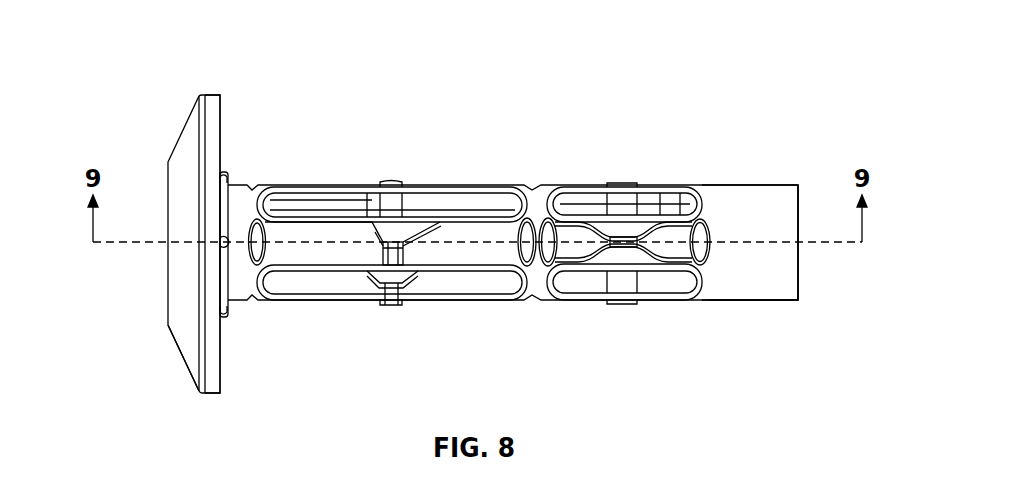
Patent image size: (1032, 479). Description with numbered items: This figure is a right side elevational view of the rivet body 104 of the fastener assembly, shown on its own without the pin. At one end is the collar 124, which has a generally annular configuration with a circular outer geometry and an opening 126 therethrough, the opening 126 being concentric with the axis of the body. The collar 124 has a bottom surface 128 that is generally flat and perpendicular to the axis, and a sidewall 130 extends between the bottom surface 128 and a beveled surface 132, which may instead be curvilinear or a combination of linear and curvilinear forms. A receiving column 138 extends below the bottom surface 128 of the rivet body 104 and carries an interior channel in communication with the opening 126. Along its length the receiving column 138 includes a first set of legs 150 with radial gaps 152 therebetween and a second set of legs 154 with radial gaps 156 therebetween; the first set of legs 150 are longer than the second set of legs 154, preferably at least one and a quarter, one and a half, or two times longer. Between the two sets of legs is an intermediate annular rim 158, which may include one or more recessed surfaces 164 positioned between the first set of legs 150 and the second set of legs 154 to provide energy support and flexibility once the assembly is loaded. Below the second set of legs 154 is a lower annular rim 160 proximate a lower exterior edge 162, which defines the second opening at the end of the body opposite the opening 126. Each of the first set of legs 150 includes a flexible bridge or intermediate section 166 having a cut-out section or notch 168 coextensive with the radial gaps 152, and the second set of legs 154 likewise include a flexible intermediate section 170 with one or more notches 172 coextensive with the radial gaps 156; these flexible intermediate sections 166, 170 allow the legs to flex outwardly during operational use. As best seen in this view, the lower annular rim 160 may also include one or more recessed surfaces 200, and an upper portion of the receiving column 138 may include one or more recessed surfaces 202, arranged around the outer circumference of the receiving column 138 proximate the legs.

The rivet body 104 is at (138, 43).
The collar 124 is at (213, 387).
The opening 126 is at (131, 165).
The bottom surface 128 is at (220, 128).
The sidewall 130 is at (210, 107).
The beveled surface 132 is at (185, 366).
The receiving column 138 is at (747, 292).
The first set of legs 150 is at (460, 190).
The radial gaps 152 is at (292, 206).
The second set of legs 154 is at (580, 195).
The radial gaps 156 is at (674, 204).
The intermediate annular rim 158 is at (535, 298).
The lower annular rim 160 is at (728, 202).
The lower exterior edge 162 is at (800, 187).
The recessed surfaces 164 is at (529, 187).
The flexible intermediate section 166 is at (383, 302).
The notch 168 is at (396, 214).
The flexible intermediate section 170 is at (625, 300).
The notches 172 is at (619, 191).
The recessed surfaces 200 is at (701, 300).
The recessed surfaces 202 is at (265, 265).